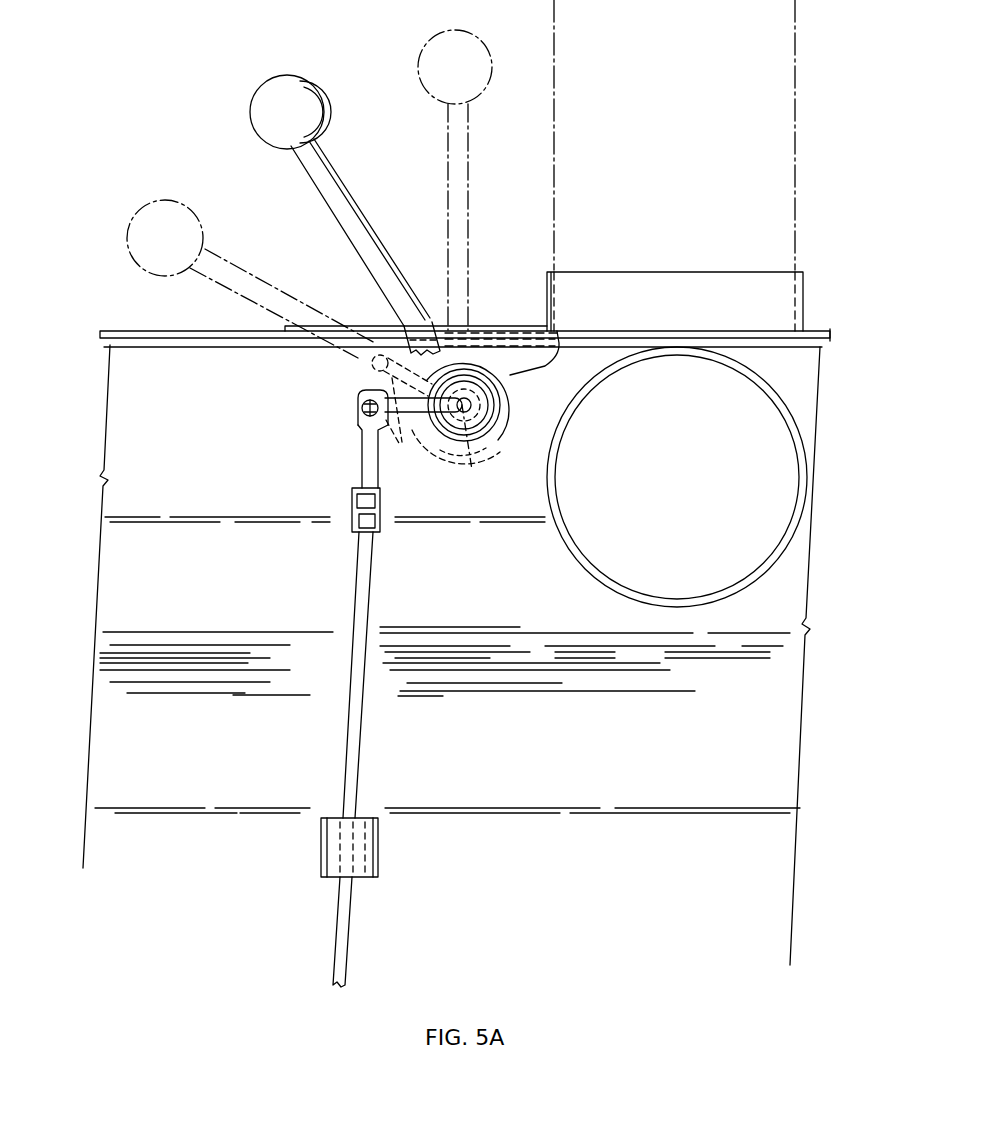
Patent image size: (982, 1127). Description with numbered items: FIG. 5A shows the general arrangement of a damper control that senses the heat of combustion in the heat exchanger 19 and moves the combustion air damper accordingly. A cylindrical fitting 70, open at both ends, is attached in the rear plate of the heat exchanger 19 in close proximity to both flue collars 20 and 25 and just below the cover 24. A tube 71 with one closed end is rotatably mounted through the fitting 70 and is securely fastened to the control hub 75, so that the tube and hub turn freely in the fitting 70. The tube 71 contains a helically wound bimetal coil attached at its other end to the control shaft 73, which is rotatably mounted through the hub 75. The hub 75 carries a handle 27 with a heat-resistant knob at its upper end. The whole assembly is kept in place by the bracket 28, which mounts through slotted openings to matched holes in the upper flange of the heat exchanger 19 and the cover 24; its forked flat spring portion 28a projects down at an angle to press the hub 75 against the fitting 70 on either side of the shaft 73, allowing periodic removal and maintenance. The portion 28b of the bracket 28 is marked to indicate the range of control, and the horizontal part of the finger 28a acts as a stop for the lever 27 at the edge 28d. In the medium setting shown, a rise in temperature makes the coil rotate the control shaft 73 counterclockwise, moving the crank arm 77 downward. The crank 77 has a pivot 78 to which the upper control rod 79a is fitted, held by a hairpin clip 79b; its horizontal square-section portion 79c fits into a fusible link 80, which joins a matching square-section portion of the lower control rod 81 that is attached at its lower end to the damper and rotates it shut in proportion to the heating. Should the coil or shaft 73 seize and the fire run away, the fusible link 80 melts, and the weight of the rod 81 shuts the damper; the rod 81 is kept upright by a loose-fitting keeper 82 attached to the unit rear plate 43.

The heat exchanger 19 is at (104, 402).
The flue collar 20 is at (572, 555).
The cover 24 is at (163, 331).
The flue collar 25 is at (620, 272).
The handle 27 is at (470, 218).
The bracket 28 is at (562, 322).
The forked flat spring portion 28a is at (462, 463).
The marked portion of bracket 28b is at (375, 327).
The edge 28d is at (470, 325).
The unit rear plate 43 is at (222, 853).
The cylindrical fitting 70 is at (500, 415).
The tube 71 is at (480, 405).
The control shaft 73 is at (480, 430).
The control hub 75 is at (495, 372).
The crank arm 77 is at (393, 445).
The pivot 78 is at (362, 427).
The upper control rod 79a is at (360, 456).
The hairpin clip 79b is at (360, 392).
The horizontal portion of square cross-section 79c is at (380, 500).
The fusible link 80 is at (352, 505).
The lower control rod 81 is at (353, 563).
The keeper 82 is at (320, 832).